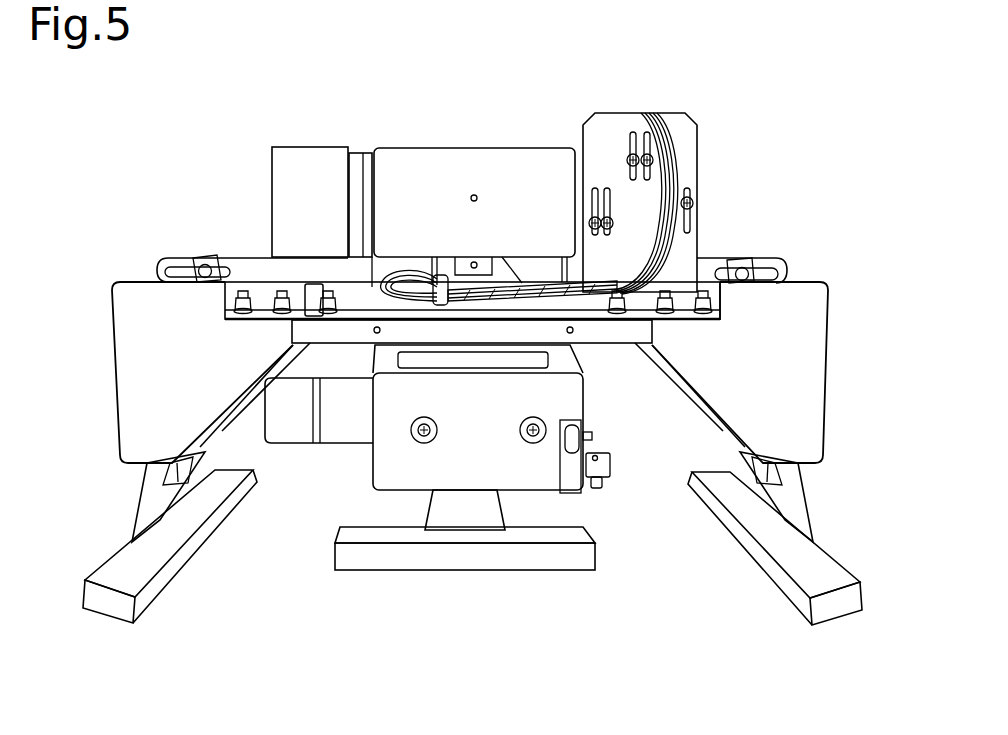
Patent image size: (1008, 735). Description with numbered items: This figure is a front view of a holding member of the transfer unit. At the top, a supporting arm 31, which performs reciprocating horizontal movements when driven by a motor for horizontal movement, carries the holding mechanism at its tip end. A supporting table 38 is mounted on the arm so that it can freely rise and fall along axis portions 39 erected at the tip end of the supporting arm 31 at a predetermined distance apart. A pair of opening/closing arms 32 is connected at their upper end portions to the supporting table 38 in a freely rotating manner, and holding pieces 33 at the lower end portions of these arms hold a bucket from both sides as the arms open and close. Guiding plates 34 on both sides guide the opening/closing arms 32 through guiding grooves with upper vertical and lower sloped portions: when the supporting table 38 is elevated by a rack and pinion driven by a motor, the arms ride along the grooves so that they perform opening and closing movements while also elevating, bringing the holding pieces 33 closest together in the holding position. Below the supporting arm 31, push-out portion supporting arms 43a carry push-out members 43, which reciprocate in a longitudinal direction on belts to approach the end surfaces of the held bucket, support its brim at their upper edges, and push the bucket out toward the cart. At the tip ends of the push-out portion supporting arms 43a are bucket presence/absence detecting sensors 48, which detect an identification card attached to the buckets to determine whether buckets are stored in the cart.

The supporting arm 31 is at (610, 333).
The opening/closing arm 32 is at (142, 498).
The holding piece 33 is at (187, 555).
The guiding plate 34 is at (120, 290).
The supporting table 38 is at (280, 153).
The axis portion 39 is at (310, 295).
The push-out member 43 is at (473, 565).
The push-out portion supporting arm 43a is at (383, 466).
The bucket presence/absence detecting sensor 48 is at (597, 489).